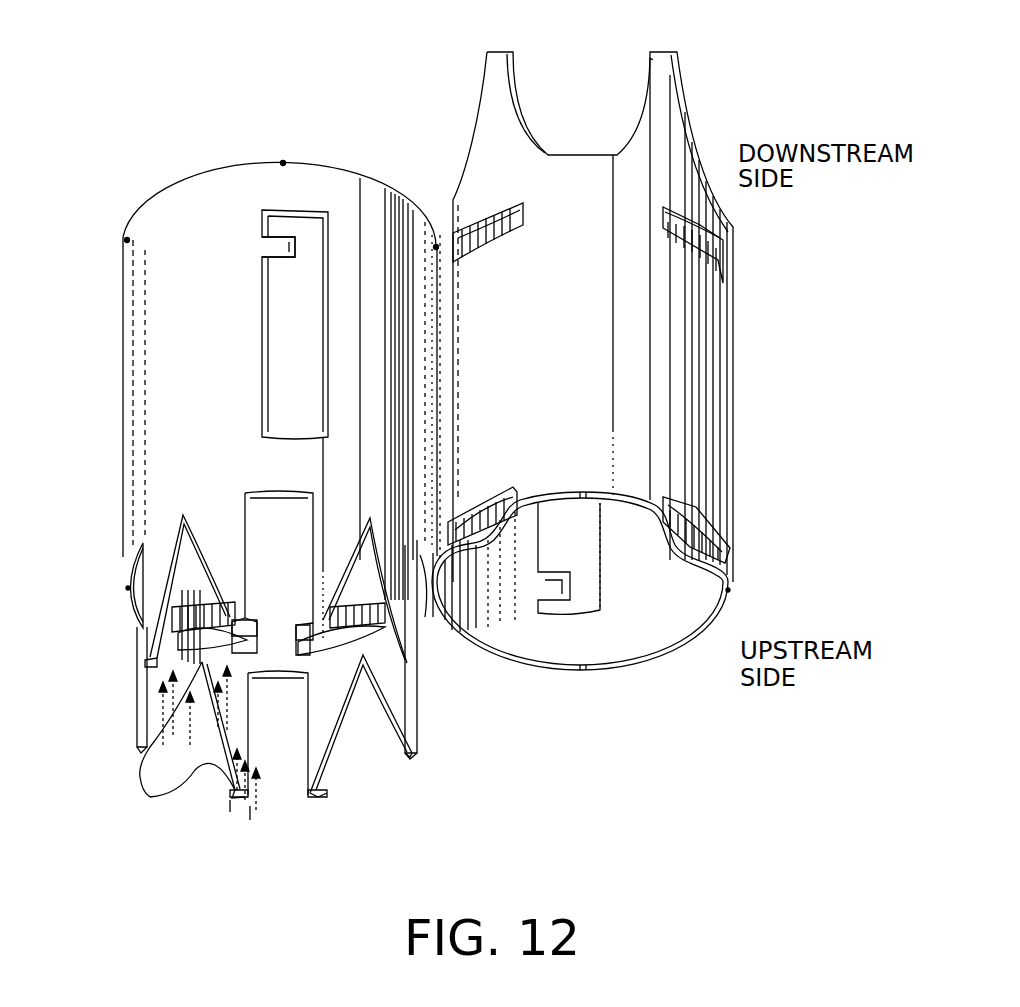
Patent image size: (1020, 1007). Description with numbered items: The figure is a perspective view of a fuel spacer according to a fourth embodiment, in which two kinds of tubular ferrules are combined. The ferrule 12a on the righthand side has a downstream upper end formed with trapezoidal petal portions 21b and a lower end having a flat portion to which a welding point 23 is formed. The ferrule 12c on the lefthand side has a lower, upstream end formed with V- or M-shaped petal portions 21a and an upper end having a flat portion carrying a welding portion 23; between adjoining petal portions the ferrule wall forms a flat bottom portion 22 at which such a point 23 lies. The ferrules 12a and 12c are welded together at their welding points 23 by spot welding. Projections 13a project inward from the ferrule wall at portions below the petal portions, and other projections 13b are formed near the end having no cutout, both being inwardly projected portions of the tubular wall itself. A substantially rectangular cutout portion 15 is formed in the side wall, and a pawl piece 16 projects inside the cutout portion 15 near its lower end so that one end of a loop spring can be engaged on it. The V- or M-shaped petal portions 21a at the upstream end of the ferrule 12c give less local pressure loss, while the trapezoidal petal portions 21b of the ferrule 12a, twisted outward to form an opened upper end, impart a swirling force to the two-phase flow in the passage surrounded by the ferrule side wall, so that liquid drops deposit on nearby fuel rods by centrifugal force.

The ferrule 12a is at (725, 470).
The ferrule 12c is at (131, 376).
The projection 13a is at (180, 645).
The projection 13b is at (715, 515).
The cutout portion 15 is at (310, 247).
The pawl piece 16 is at (278, 243).
The petal portion 21a is at (150, 797).
The petal portion 21b is at (683, 83).
The flat bottom portion 22 is at (128, 610).
The welding point 23 is at (127, 240).